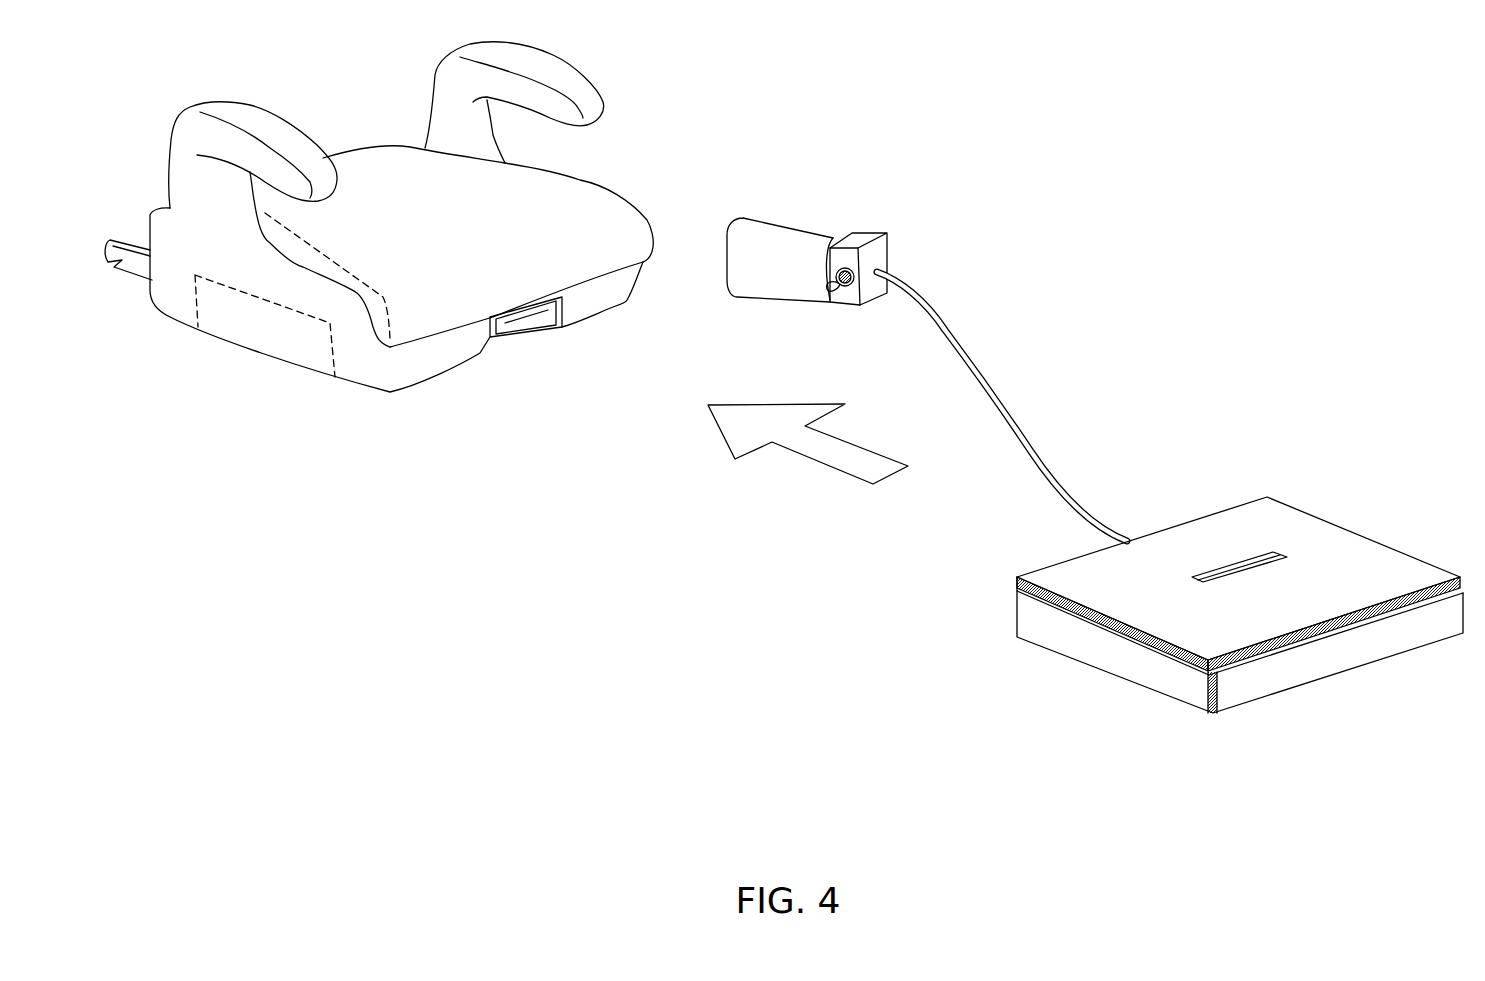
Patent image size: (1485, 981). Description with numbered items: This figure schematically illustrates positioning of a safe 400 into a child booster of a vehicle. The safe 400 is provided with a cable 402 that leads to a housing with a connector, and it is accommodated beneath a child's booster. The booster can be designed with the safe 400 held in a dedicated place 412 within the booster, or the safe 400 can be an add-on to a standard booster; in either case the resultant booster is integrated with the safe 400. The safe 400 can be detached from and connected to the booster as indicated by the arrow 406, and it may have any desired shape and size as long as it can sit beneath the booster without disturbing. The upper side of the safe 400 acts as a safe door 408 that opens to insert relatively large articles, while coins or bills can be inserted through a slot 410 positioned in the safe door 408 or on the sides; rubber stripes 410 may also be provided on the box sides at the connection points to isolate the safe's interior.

The safe 400 is at (1240, 602).
The cable 402 is at (1013, 420).
The arrow 406 is at (825, 455).
The safe door 408 is at (1328, 595).
The slot 410 is at (1238, 563).
The dedicated place 412 is at (263, 340).